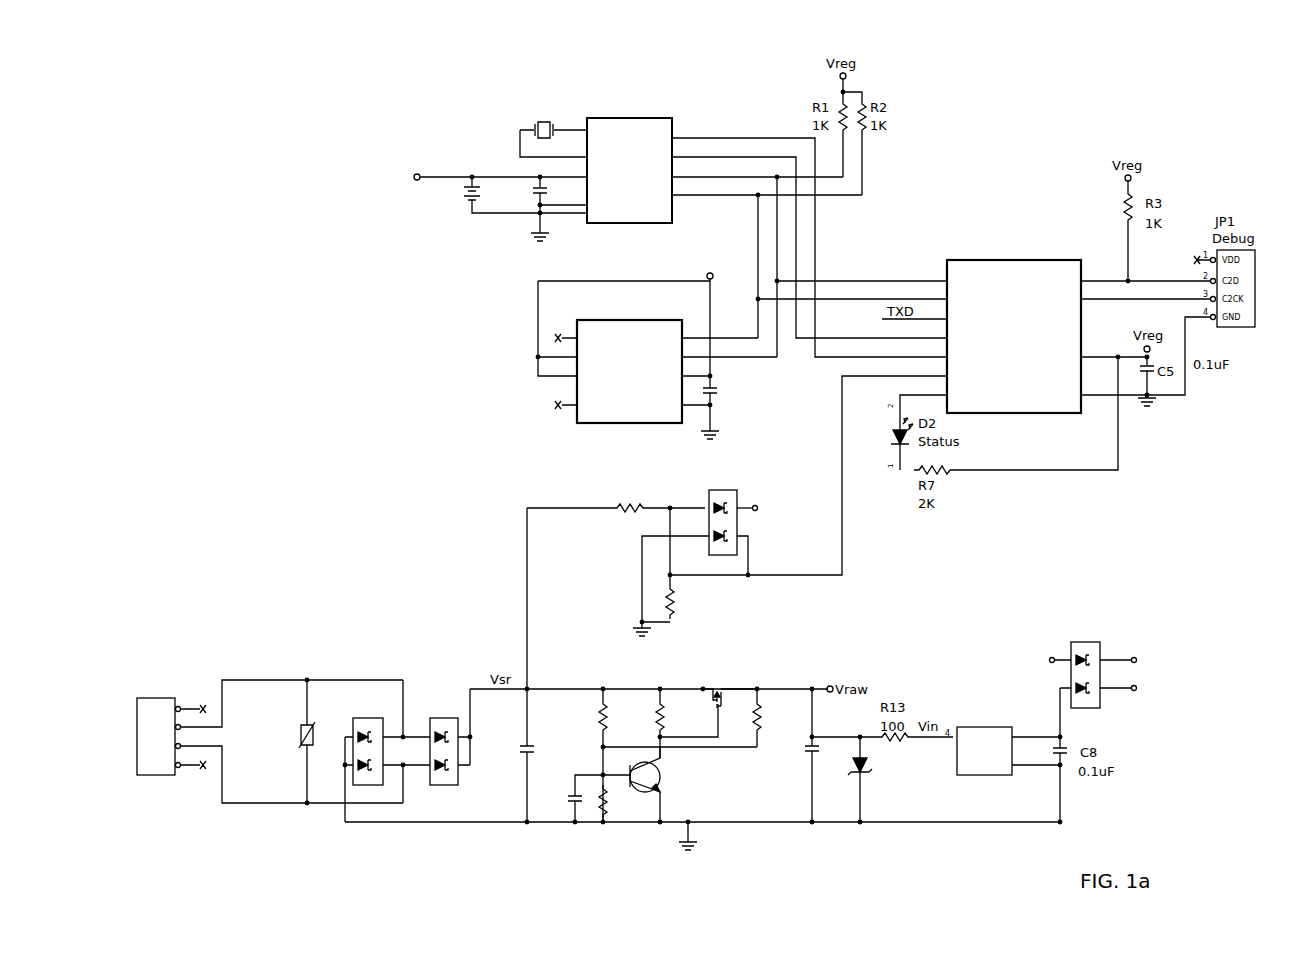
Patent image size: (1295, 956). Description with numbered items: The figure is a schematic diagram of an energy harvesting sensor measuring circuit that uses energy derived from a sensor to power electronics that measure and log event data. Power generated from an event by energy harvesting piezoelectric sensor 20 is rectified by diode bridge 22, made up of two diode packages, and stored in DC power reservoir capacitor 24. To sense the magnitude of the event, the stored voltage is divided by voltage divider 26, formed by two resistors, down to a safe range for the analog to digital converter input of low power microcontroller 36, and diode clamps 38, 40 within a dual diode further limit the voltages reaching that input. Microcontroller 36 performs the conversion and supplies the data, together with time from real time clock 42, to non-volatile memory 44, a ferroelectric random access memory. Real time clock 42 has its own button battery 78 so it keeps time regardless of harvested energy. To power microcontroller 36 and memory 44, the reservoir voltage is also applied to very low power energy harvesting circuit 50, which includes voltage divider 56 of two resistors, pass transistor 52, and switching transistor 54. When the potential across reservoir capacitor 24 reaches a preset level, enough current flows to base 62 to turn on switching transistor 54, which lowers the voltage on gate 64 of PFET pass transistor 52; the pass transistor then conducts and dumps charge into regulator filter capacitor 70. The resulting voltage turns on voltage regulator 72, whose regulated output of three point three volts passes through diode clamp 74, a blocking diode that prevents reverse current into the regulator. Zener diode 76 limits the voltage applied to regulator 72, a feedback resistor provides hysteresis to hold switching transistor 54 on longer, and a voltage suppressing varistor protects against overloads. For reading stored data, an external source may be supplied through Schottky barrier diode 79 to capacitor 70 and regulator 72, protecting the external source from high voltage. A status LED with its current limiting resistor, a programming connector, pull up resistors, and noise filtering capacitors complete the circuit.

The energy harvesting piezoelectric sensor 20 is at (150, 747).
The diode bridge 22 is at (407, 722).
The DC power reservoir capacitor 24 is at (544, 733).
The voltage divider 26 is at (664, 551).
The low power microcontroller 36 is at (1053, 335).
The diode clamp 38 is at (744, 494).
The diode clamp 40 is at (751, 540).
The real time clock 42 is at (640, 224).
The non-volatile memory 44 is at (635, 369).
The energy harvesting circuit 50 is at (834, 616).
The pass transistor 52 is at (700, 685).
The switching transistor 54 is at (648, 803).
The voltage divider 56 is at (598, 739).
The base 62 is at (590, 777).
The gate 64 is at (720, 720).
The regulator filter capacitor 70 is at (823, 770).
The voltage regulator 72 is at (982, 740).
The diode clamp 74 is at (1104, 697).
The Zener diode 76 is at (871, 782).
The button battery 78 is at (410, 231).
The Schottky barrier diode 79 is at (1114, 645).